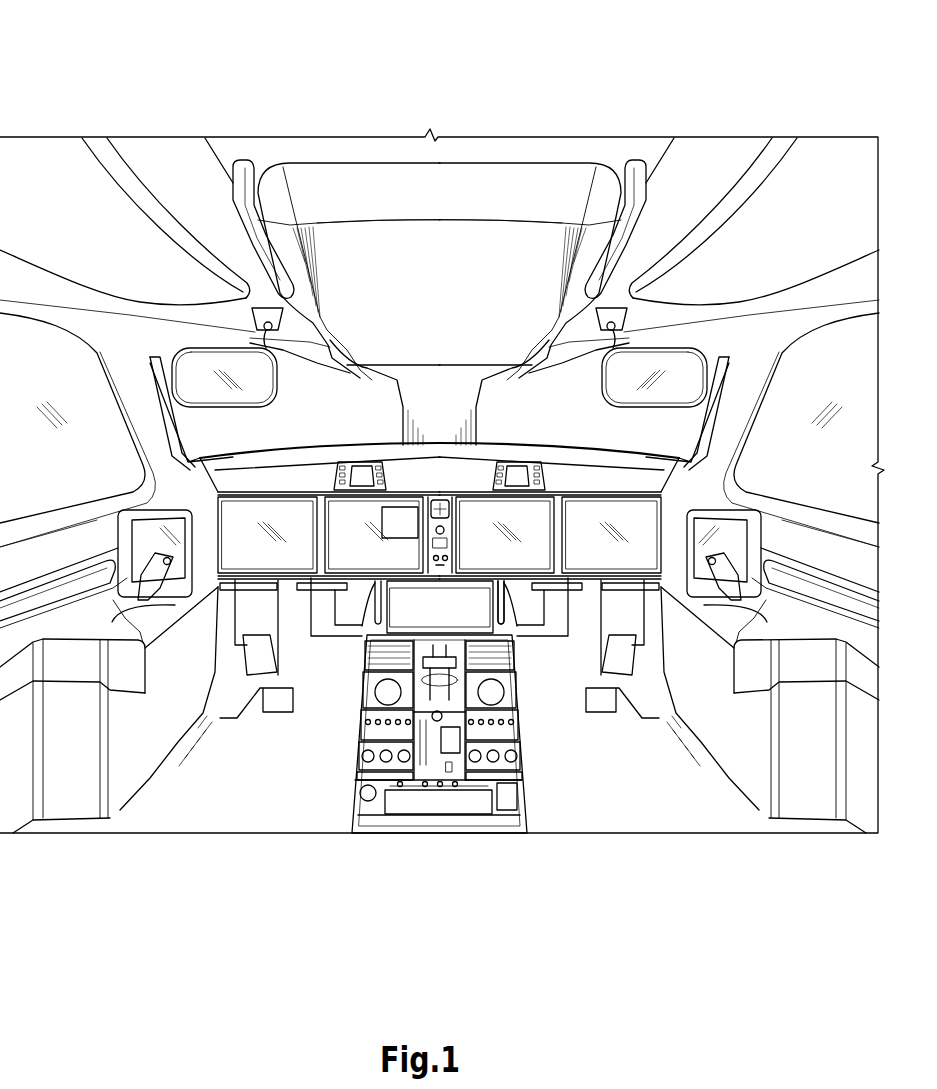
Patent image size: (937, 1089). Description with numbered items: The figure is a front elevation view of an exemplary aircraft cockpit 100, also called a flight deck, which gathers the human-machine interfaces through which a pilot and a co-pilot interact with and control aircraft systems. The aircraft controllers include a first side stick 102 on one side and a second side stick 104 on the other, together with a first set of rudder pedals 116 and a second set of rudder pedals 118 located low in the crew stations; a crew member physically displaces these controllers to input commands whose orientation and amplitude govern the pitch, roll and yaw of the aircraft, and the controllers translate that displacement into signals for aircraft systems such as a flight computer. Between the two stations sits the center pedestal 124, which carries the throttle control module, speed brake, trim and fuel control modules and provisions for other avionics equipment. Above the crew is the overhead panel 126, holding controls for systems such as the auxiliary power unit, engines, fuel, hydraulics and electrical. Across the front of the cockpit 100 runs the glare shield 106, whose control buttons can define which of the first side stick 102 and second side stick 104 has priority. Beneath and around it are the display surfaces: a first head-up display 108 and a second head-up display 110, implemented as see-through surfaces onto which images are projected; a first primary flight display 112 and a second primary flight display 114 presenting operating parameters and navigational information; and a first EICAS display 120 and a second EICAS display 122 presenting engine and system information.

The aircraft cockpit 100 is at (833, 197).
The first side stick 102 is at (150, 575).
The second side stick 104 is at (727, 587).
The glare shield 106 is at (372, 487).
The first head-up display 108 is at (197, 375).
The second head-up display 110 is at (662, 366).
The first primary flight display 112 is at (297, 548).
The second primary flight display 114 is at (593, 545).
The first set of rudder pedals 116 is at (266, 716).
The second set of rudder pedals 118 is at (616, 716).
The first EICAS display 120 is at (345, 517).
The second EICAS display 122 is at (520, 528).
The center pedestal 124 is at (462, 818).
The overhead panel 126 is at (446, 297).